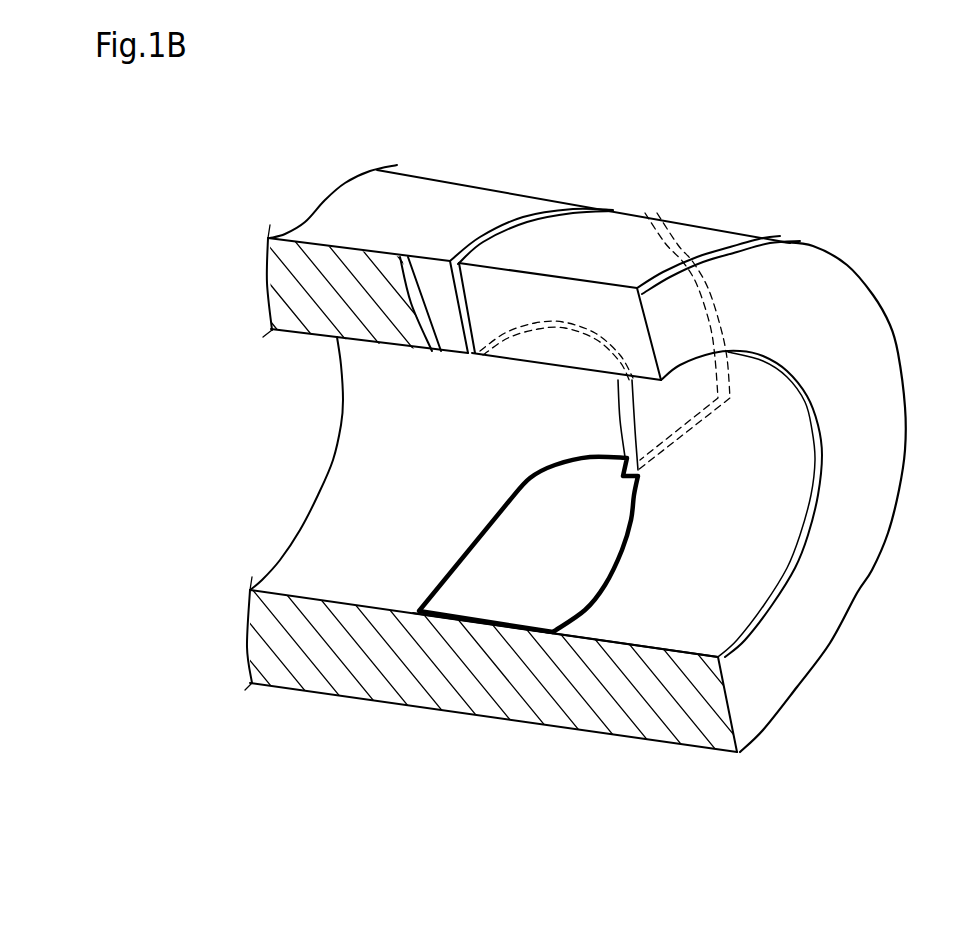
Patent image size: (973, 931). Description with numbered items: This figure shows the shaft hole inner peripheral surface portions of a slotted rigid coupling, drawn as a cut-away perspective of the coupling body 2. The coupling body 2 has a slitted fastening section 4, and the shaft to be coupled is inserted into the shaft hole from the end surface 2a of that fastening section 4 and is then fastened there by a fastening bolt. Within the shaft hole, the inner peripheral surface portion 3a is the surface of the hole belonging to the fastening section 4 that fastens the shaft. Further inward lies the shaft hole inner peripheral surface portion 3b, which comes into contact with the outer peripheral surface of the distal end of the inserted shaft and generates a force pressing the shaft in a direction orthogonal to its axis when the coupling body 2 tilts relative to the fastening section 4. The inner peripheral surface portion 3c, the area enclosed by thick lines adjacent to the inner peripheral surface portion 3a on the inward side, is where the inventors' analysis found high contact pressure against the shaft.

The coupling body 2 is at (739, 205).
The end surface 2a is at (857, 354).
The inner peripheral surface portion 3a is at (660, 607).
The shaft hole inner peripheral surface portion 3b is at (360, 570).
The inner peripheral surface portion 3c is at (466, 527).
The fastening section 4 is at (668, 203).